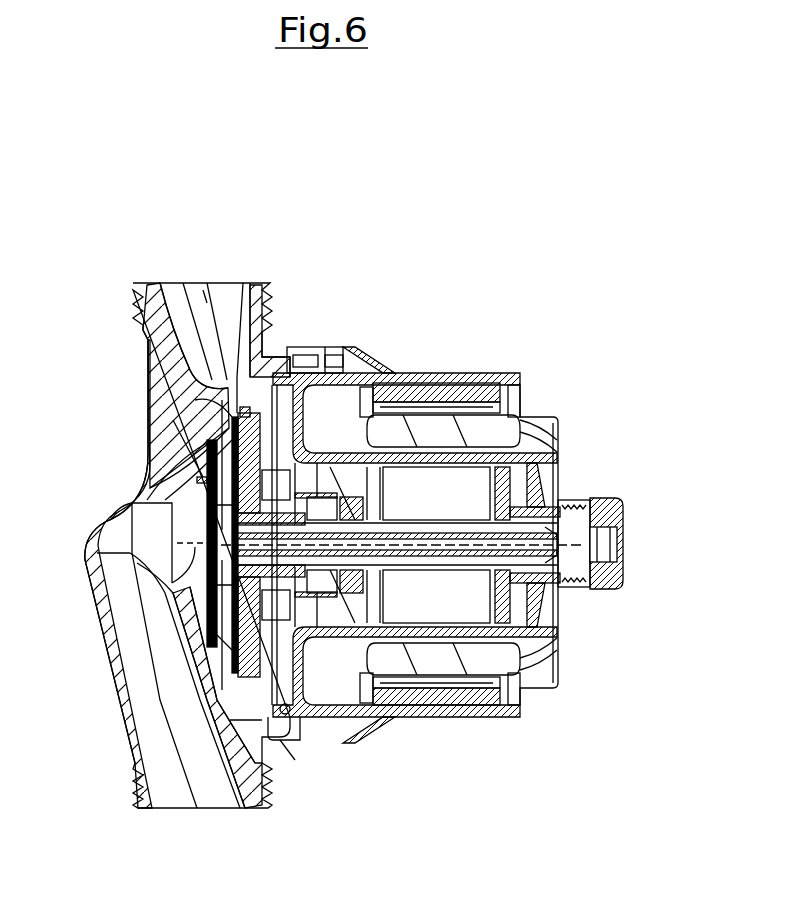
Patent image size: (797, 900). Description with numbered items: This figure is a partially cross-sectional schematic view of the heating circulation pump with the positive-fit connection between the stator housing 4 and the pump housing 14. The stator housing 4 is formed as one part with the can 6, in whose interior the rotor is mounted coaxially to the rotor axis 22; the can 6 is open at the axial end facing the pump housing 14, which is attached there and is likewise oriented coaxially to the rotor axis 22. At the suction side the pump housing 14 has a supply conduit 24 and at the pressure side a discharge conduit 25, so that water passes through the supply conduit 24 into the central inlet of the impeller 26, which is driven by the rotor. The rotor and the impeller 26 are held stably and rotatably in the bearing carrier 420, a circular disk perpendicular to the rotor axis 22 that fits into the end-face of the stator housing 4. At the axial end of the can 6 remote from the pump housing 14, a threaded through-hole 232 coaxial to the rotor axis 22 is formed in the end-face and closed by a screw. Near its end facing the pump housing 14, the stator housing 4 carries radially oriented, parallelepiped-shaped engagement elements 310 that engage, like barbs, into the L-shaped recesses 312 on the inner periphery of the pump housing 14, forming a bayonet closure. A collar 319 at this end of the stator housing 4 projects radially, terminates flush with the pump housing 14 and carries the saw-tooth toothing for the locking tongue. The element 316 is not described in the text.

The stator housing 4 is at (407, 370).
The can 6 is at (592, 498).
The pump housing 14 is at (255, 292).
The rotor axis 22 is at (183, 597).
The supply conduit 24 is at (221, 790).
The discharge conduit 25 is at (205, 300).
The impeller 26 is at (235, 428).
The through-hole 232 is at (573, 565).
The engagement elements 310 is at (308, 362).
The recesses 312 is at (330, 368).
The O-ring 316 is at (292, 712).
The collar 319 is at (375, 362).
The bearing carrier 420 is at (285, 720).